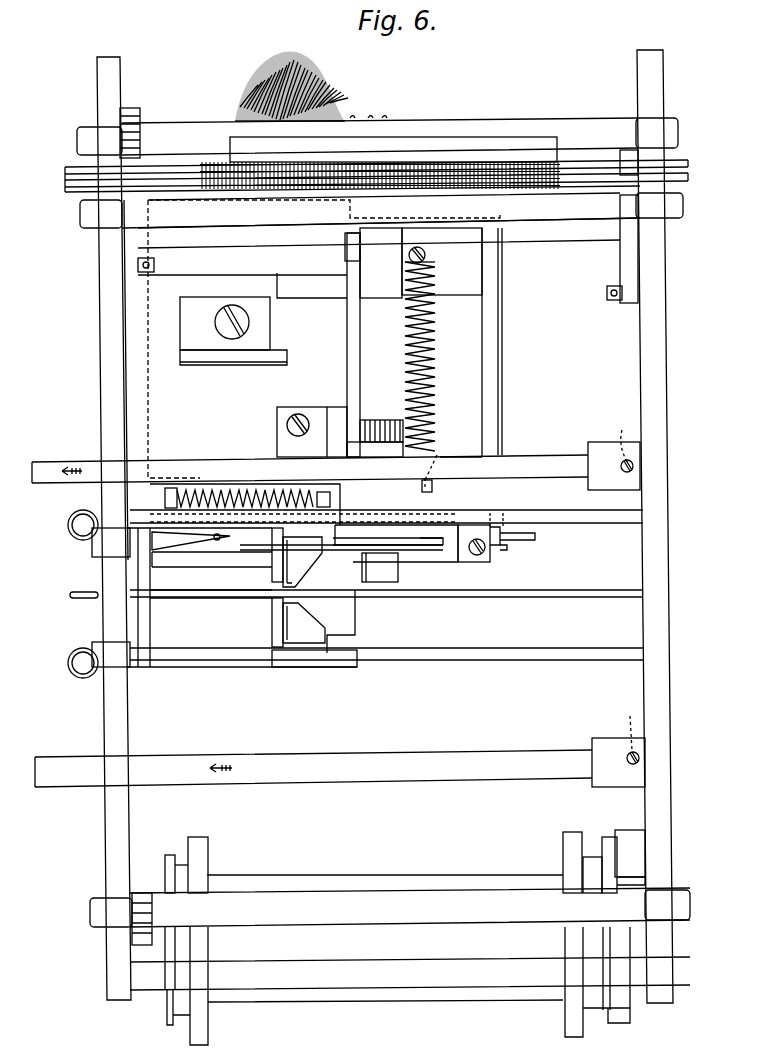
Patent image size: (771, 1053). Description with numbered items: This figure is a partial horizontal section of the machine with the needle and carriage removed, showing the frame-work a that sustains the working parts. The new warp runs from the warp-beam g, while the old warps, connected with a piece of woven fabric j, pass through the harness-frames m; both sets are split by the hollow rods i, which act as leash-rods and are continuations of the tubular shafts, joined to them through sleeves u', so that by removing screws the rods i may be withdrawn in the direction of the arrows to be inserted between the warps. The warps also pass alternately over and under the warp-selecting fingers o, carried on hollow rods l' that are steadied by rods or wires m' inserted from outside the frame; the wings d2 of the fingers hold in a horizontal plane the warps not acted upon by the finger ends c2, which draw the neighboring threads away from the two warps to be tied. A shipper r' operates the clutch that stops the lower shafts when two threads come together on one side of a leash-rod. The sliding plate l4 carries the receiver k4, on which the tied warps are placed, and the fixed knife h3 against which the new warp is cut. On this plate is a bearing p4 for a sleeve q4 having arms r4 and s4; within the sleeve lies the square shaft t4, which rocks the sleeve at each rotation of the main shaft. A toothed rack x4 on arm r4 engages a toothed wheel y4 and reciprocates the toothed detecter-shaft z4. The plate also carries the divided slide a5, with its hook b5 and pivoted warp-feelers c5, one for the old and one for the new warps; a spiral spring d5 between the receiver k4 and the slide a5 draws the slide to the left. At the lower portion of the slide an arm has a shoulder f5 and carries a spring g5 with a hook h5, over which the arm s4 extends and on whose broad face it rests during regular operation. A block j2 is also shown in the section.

The frame-work a is at (385, 526).
The harness-frames m is at (385, 172).
The rods or wires m' is at (113, 596).
The shaft t4 is at (389, 241).
The sliding plate l4 is at (242, 344).
The fixed knife h3 is at (233, 345).
The arm r4 is at (344, 345).
The sleeve q4 is at (413, 261).
The bearing p4 is at (381, 263).
The arm s4 is at (478, 342).
The toothed rack x4 is at (340, 432).
The toothed wheel y4 is at (381, 421).
The hollow rods i is at (312, 621).
The sleeves u' is at (616, 614).
The shipper r' is at (624, 579).
The spiral spring d5 is at (165, 497).
The hollow rods l' is at (386, 573).
The receiver k4 is at (191, 538).
The divided slide a5 is at (212, 559).
The ends of fingers c2 is at (272, 604).
The warp-selecting fingers o is at (277, 586).
The wings d2 is at (302, 562).
The cam block j2 is at (314, 628).
The warp-feelers c5 is at (341, 555).
The spring g5 is at (395, 543).
The hook b5 is at (431, 536).
The toothed detecter-shaft z4 is at (380, 567).
The hook h5 is at (536, 532).
The shoulder f5 is at (507, 544).
The woven fabric j is at (250, 82).
The warp-beam g is at (390, 937).